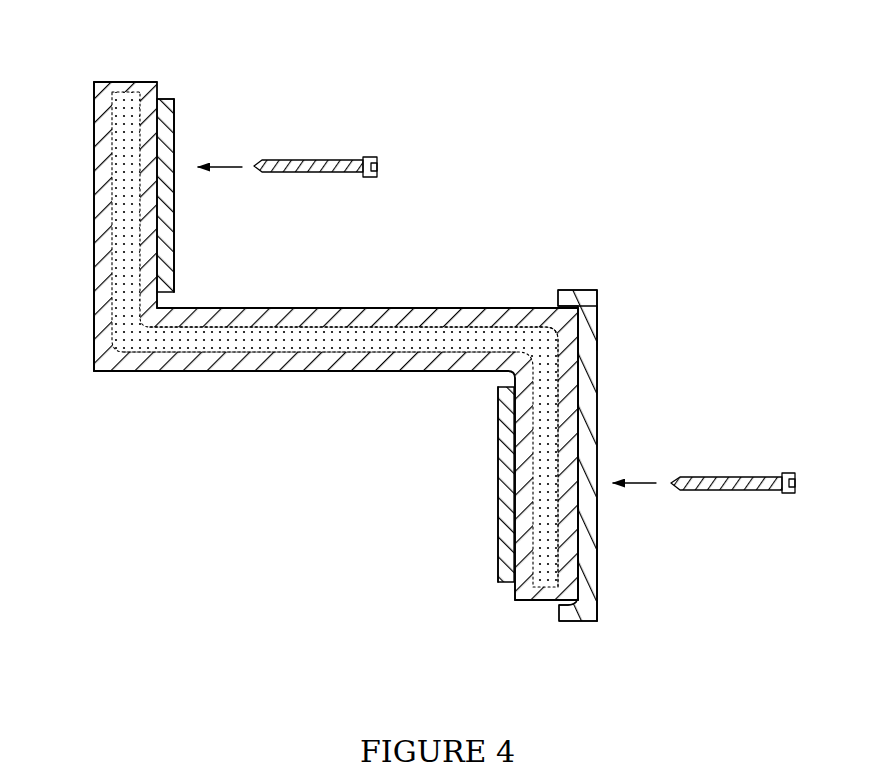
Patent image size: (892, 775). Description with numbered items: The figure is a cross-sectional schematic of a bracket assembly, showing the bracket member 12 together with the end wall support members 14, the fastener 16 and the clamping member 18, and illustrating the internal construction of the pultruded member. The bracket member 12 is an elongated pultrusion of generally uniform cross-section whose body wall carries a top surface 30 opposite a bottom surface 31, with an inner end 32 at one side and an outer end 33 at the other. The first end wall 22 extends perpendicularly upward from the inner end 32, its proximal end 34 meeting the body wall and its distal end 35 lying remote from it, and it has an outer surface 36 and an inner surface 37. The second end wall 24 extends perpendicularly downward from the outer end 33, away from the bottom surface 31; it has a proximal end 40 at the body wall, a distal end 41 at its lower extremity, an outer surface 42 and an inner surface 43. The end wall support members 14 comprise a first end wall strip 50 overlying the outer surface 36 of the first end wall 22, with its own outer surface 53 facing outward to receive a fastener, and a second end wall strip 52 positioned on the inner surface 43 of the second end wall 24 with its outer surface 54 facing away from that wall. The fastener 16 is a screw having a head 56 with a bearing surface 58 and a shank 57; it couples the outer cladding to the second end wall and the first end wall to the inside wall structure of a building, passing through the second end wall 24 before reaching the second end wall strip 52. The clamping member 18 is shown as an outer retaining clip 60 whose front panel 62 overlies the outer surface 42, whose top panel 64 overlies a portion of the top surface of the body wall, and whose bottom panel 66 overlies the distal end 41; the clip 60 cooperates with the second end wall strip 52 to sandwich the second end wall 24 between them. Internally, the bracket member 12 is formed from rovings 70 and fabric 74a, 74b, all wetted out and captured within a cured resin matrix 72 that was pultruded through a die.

The bracket member 12 is at (175, 406).
The end wall support members 14 is at (177, 195).
The fastener 16 is at (346, 52).
The clamping member 18 is at (600, 383).
The first end wall 22 is at (88, 190).
The second end wall 24 is at (580, 513).
The top surface 30 is at (251, 308).
The bottom surface 31 is at (229, 372).
The inner end 32 is at (166, 291).
The outer end 33 is at (596, 313).
The proximal end 34 is at (88, 350).
The distal end 35 is at (124, 78).
The outer surface 36 is at (158, 108).
The inner surface 37 is at (93, 298).
The proximal end 40 is at (600, 343).
The distal end 41 is at (497, 601).
The outer surface 42 is at (578, 573).
The inner surface 43 is at (520, 470).
The first end wall strip 50 is at (177, 138).
The second end wall strip 52 is at (498, 433).
The outer surface 53 is at (176, 243).
The outer surface 54 is at (498, 532).
The head 56 is at (534, 309).
The shank 57 is at (309, 159).
The bearing surface 58 is at (371, 156).
The outer retaining clip 60 is at (600, 430).
The front panel 62 is at (600, 548).
The top panel 64 is at (580, 291).
The bottom panel 66 is at (580, 622).
The rovings 70 is at (396, 336).
The resin matrix 72 is at (445, 322).
The fabric 74a is at (337, 326).
The fabric 74b is at (316, 356).